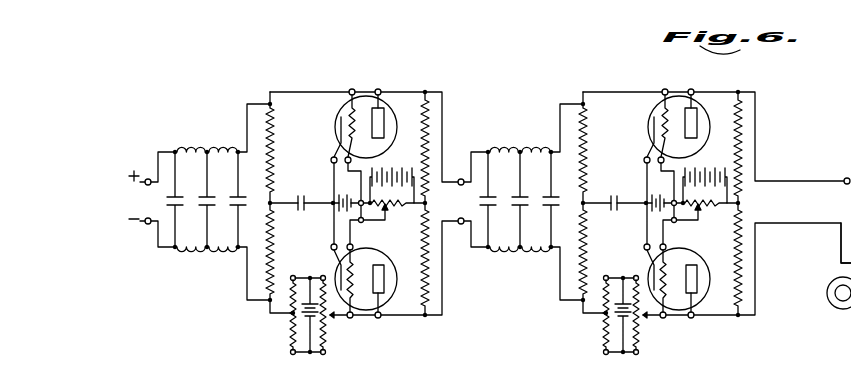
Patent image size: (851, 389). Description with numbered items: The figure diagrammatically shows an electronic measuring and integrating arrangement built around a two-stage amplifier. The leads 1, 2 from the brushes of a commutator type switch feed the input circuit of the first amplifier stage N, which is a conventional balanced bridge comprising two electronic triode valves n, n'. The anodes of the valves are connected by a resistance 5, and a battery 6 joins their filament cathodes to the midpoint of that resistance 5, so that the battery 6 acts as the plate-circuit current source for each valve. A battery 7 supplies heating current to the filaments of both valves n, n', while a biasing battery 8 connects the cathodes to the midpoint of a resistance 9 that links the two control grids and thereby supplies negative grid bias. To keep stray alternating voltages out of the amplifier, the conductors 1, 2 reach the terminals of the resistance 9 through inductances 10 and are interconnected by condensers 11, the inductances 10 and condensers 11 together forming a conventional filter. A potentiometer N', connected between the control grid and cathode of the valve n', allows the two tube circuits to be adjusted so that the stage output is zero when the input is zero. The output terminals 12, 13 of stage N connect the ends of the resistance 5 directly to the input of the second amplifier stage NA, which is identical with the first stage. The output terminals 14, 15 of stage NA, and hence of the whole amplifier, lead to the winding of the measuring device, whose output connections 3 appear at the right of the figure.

The lead 1 is at (153, 176).
The lead 2 is at (153, 229).
The output terminals and receiver 3 is at (824, 342).
The resistance 5 is at (431, 132).
The battery 6 is at (406, 167).
The battery 7 is at (345, 212).
The biasing battery 8 is at (301, 193).
The resistance 9 is at (277, 152).
The inductances 10 is at (225, 150).
The condensers 11 is at (233, 196).
The output terminal 12 is at (458, 178).
The output terminal 13 is at (458, 226).
The output terminal 14 is at (805, 178).
The output terminal 15 is at (802, 226).
The first amplifier stage N is at (328, 67).
The second amplifier stage NA is at (660, 90).
The electronic triode valve n is at (508, 126).
The electronic triode valve n' is at (523, 274).
The potentiometer N' is at (446, 315).